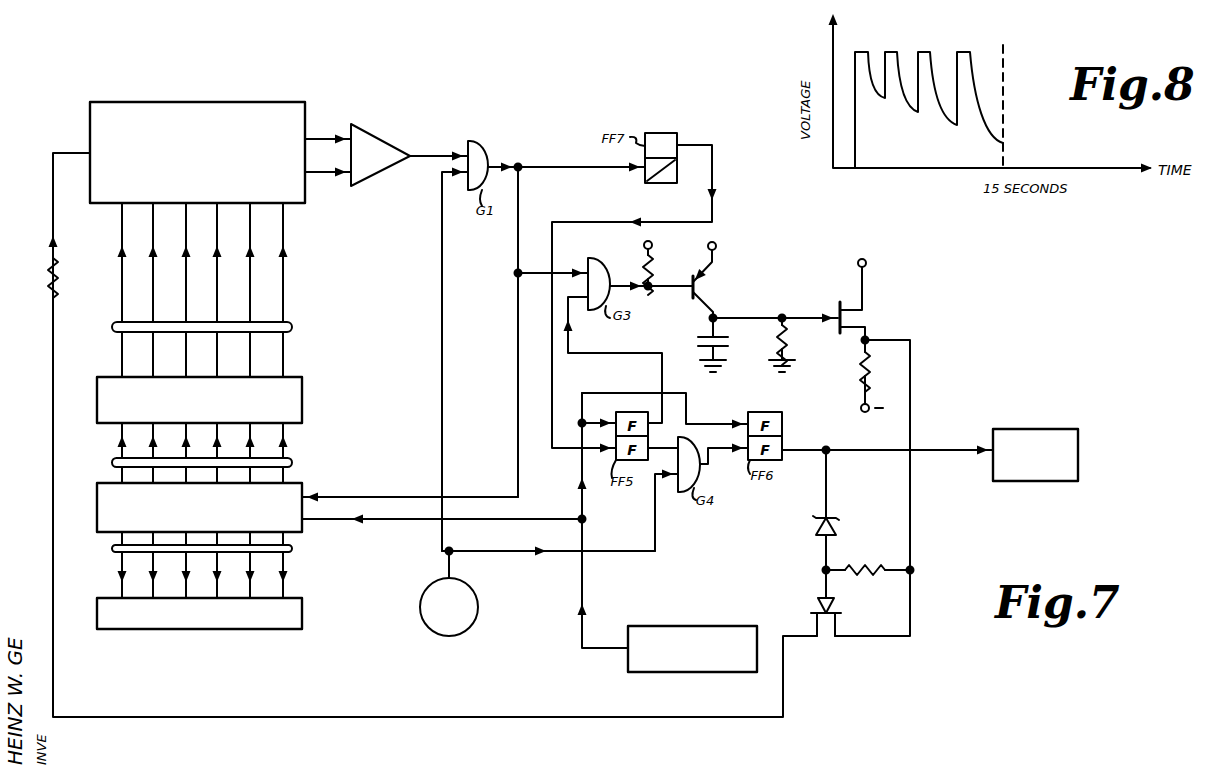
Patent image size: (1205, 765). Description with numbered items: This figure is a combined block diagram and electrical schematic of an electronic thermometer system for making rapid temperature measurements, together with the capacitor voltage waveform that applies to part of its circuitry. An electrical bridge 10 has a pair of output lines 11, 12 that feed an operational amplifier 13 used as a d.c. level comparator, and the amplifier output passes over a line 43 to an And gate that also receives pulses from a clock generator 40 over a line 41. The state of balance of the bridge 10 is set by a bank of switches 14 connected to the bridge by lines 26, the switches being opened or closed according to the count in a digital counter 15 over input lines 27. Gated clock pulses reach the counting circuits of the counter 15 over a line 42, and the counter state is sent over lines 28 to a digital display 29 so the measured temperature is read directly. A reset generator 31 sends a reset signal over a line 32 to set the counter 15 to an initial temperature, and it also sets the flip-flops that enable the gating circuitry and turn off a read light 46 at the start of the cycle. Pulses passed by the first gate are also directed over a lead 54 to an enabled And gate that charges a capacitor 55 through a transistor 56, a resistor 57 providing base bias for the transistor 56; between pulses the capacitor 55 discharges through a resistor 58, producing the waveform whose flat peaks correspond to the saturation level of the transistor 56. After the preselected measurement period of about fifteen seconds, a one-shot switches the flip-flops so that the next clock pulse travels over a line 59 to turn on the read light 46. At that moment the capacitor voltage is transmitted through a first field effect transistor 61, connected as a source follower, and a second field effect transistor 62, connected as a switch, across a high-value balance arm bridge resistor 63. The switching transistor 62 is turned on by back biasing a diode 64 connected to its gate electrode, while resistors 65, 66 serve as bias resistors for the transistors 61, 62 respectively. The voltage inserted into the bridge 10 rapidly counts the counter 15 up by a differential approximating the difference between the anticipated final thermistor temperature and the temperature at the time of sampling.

The electrical bridge 10 is at (213, 103).
The output line 11 is at (318, 140).
The output line 12 is at (319, 174).
The operational amplifier 13 is at (377, 138).
The line 43 is at (438, 146).
The line 41 is at (442, 290).
The lines 26 is at (292, 327).
The bank of switches 14 is at (295, 417).
The input lines 27 is at (292, 462).
The digital counter 15 is at (295, 492).
The line 42 is at (362, 498).
The line 32 is at (388, 523).
The lines 28 is at (292, 548).
The digital display 29 is at (295, 607).
The clock generator 40 is at (420, 607).
The line 59 is at (500, 553).
The reset generator 31 is at (656, 672).
The balance arm bridge resistor 63 is at (44, 275).
The gate G3 input lead 54 is at (546, 270).
The resistor 57 is at (656, 268).
The transistor 56 is at (716, 283).
The capacitor 55 is at (728, 350).
The resistor 58 is at (792, 338).
The first field effect transistor 61 is at (868, 318).
The resistor 65 is at (872, 372).
The read light 46 is at (1078, 432).
The diode 64 is at (840, 530).
The resistor 66 is at (855, 562).
The second field effect transistor 62 is at (827, 642).